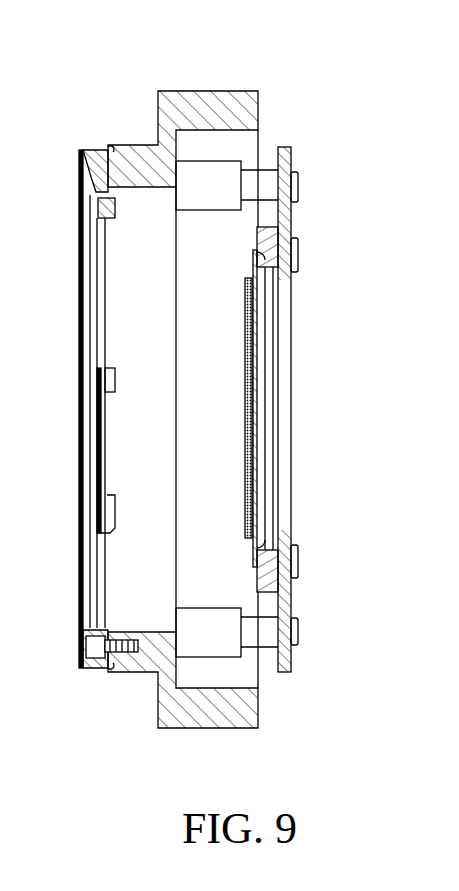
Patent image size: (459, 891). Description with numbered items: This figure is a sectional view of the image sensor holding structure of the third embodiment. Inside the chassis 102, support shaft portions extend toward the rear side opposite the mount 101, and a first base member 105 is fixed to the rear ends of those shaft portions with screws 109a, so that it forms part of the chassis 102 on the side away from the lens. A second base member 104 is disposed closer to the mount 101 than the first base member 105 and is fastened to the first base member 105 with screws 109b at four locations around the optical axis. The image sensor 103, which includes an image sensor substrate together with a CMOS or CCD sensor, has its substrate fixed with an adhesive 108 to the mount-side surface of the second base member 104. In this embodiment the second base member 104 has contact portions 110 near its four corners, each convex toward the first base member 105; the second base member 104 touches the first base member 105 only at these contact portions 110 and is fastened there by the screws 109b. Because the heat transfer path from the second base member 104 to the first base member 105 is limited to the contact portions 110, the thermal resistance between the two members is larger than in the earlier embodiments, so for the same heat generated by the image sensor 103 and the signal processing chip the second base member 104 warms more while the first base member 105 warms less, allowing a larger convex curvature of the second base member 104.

The mount 101 is at (84, 150).
The chassis 102 is at (190, 117).
The image sensor 103 is at (258, 393).
The second base member 104 is at (297, 192).
The first base member 105 is at (285, 146).
The adhesive 108 is at (262, 262).
The screws 109a is at (298, 175).
The screws 109b is at (298, 250).
The contact portions 110 is at (274, 240).